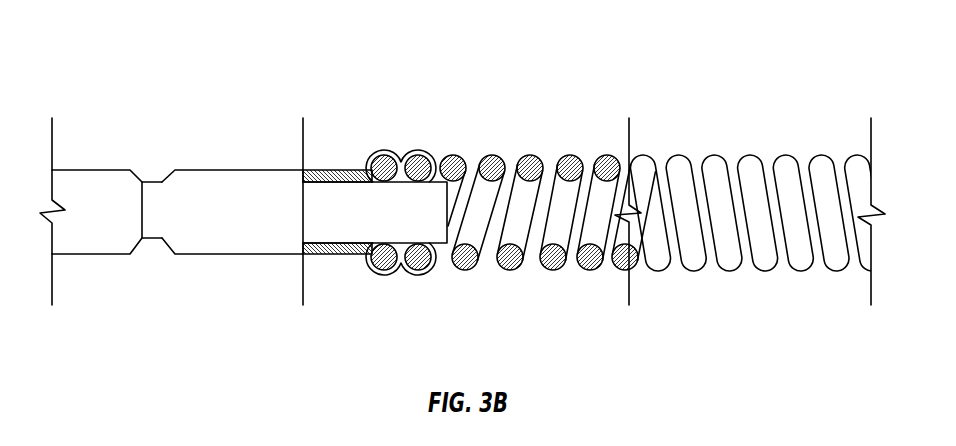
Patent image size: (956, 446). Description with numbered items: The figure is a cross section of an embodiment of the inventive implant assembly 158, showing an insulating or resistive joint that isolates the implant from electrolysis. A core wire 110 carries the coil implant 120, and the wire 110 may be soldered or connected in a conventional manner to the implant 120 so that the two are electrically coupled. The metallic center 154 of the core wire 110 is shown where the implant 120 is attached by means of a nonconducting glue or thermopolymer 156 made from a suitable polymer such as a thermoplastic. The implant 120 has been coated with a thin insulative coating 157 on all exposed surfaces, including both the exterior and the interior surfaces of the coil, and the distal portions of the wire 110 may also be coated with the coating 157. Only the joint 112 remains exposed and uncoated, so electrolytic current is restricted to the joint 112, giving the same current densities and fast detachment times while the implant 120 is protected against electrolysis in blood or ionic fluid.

The core wire 110 is at (193, 169).
The joint 112 is at (145, 240).
The implant 120 is at (508, 258).
The metallic center 154 is at (320, 232).
The nonconducting glue or thermopolymer 156 is at (400, 152).
The thin insulative coating 157 is at (570, 156).
The implant assembly 158 is at (429, 91).